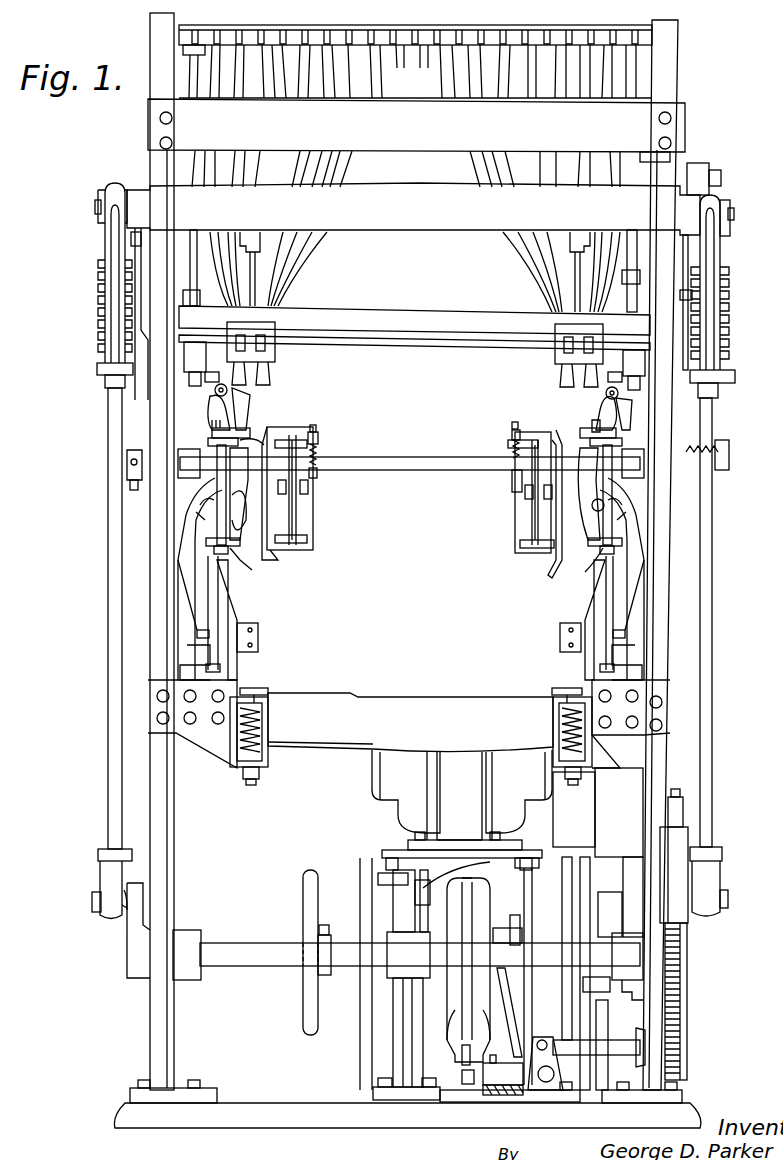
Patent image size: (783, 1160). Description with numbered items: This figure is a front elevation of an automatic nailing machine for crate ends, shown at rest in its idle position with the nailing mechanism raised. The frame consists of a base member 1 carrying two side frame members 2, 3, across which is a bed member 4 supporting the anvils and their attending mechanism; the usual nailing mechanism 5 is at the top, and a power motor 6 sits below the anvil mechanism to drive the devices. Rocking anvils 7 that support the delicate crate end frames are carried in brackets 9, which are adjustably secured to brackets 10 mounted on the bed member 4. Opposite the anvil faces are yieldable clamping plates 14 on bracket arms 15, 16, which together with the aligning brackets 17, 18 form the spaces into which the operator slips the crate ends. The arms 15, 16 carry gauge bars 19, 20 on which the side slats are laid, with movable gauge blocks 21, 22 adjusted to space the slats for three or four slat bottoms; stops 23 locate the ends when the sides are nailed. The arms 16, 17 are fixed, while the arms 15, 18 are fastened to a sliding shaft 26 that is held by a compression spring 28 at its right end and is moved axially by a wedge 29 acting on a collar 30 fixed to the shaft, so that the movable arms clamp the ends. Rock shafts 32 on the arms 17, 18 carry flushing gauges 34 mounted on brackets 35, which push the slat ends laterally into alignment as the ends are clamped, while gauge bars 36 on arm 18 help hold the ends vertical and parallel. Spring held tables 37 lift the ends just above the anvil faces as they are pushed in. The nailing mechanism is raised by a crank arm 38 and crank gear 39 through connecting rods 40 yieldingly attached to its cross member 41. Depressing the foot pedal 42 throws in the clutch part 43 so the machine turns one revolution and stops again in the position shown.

The base member 1 is at (340, 1128).
The side frame member 2 is at (165, 1004).
The side frame member 3 is at (652, 1003).
The bed member 4 is at (410, 722).
The nailing mechanism 5 is at (414, 323).
The power motor 6 is at (462, 810).
The rocking anvil 7 is at (239, 494).
The bracket 9 is at (200, 579).
The bracket 10 is at (232, 612).
The clamping plate 14 is at (267, 500).
The bracket arm 15 is at (305, 515).
The bracket arm 16 is at (522, 505).
The bracket 17 is at (250, 448).
The bracket 18 is at (622, 452).
The gauge bar 19 is at (320, 440).
The gauge bar 20 is at (512, 448).
The gauge block 21 is at (314, 425).
The gauge block 22 is at (516, 424).
The stop 23 is at (258, 640).
The shaft 26 is at (434, 468).
The compression spring 28 is at (685, 445).
The wedge 29 is at (145, 398).
The collar 30 is at (160, 496).
The rock shaft 32 is at (228, 392).
The flushing gauge 34 is at (212, 418).
The bracket 35 is at (248, 410).
The gauge bar 36 is at (250, 432).
The spring held table 37 is at (252, 688).
The crank arm 38 is at (136, 938).
The crank gear 39 is at (688, 952).
The connecting rod 40 is at (108, 684).
The cross member 41 is at (424, 199).
The foot pedal 42 is at (490, 1092).
The clutch part 43 is at (510, 925).